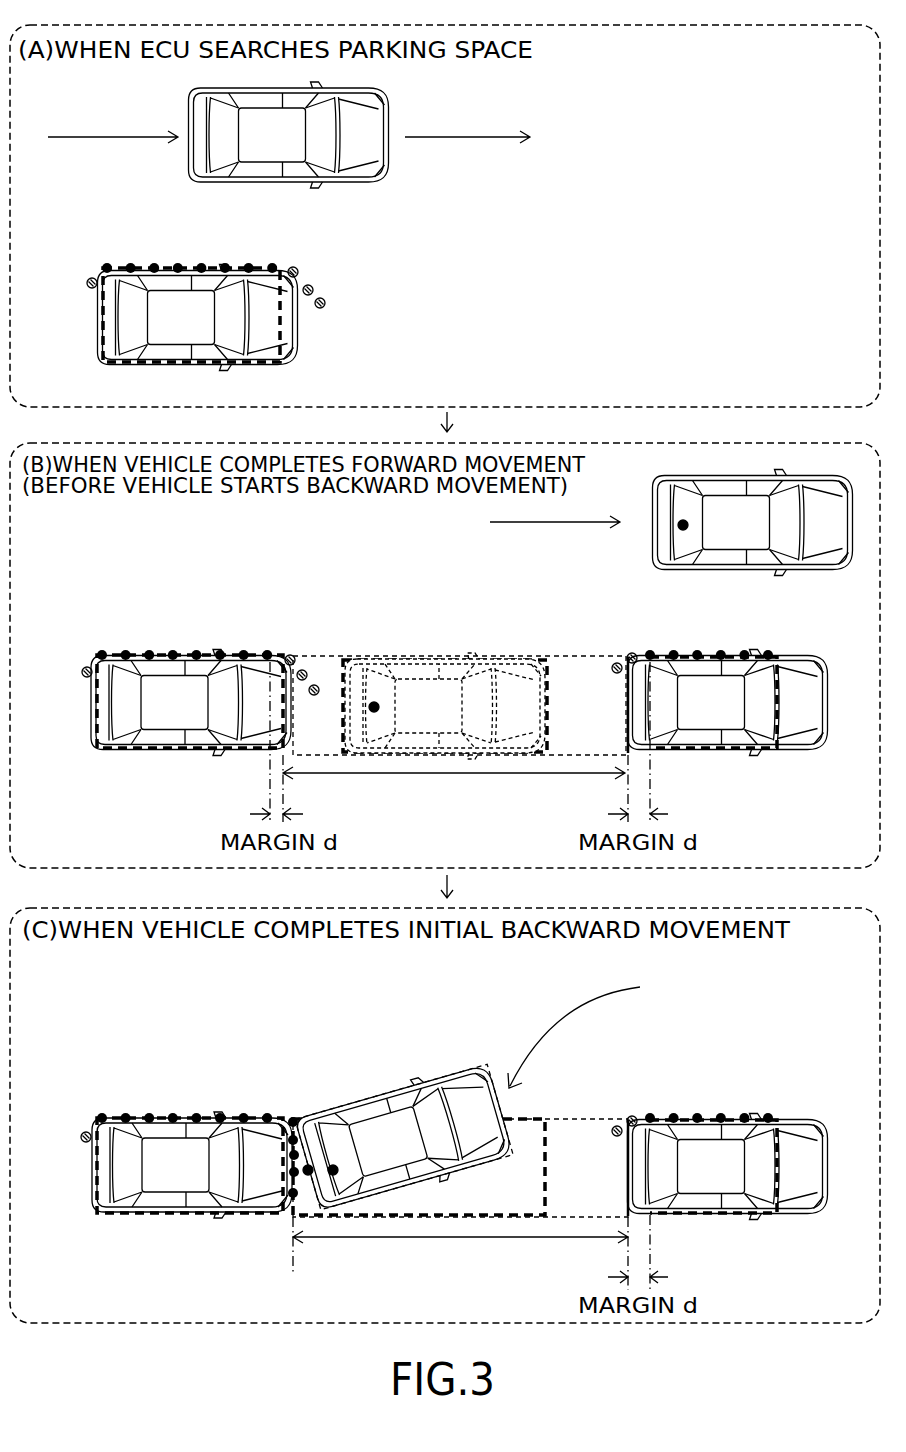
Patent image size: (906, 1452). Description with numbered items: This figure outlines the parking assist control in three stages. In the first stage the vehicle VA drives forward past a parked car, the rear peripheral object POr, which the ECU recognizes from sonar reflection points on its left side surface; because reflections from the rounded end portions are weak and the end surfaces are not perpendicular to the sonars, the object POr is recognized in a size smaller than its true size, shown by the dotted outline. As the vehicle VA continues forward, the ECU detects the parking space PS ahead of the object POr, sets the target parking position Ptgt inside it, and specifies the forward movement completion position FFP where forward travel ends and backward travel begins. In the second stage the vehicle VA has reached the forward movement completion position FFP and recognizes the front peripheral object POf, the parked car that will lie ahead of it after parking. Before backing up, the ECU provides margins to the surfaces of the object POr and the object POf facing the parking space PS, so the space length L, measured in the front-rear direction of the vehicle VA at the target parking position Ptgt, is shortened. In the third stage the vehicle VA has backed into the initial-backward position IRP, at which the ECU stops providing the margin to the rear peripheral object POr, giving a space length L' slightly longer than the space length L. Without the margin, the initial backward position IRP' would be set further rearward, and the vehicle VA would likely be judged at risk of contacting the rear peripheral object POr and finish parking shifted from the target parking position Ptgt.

The vehicle VA is at (358, 183).
The rear peripheral object POr is at (264, 362).
The front peripheral object POf is at (733, 748).
The parking space PS is at (600, 655).
The target parking position Ptgt is at (374, 704).
The forward movement completion position FFP is at (683, 528).
The initial-backward position IRP is at (337, 1123).
The initial backward position IRP' is at (293, 1123).
The space length L is at (454, 785).
The space length L' is at (460, 1252).